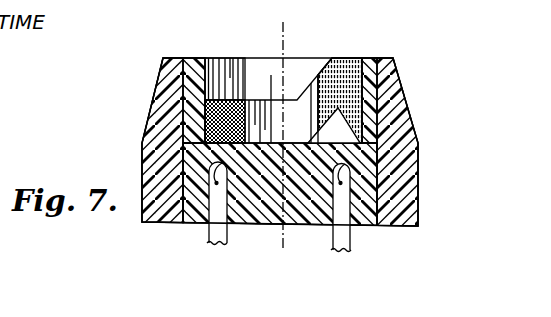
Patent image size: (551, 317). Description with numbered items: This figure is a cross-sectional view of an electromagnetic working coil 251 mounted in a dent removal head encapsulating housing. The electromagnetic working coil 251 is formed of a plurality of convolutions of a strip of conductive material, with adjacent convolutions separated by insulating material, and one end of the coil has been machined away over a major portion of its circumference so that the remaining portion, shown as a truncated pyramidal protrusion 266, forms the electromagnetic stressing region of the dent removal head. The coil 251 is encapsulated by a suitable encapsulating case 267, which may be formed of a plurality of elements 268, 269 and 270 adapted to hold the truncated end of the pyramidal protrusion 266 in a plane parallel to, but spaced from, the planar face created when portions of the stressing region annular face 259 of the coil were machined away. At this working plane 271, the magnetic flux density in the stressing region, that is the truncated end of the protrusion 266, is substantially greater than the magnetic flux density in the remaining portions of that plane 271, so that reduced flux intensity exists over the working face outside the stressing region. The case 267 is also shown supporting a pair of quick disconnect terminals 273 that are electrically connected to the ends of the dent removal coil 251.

The electromagnetic working coil 251 is at (248, 98).
The stressing region annular face 259 is at (271, 75).
The truncated pyramidal protrusion 266 is at (340, 58).
The encapsulating case 267 is at (181, 58).
The case element 268 is at (370, 58).
The case element 269 is at (408, 108).
The case element 270 is at (305, 217).
The working plane 271 is at (219, 58).
The quick disconnect terminals 273 is at (208, 230).